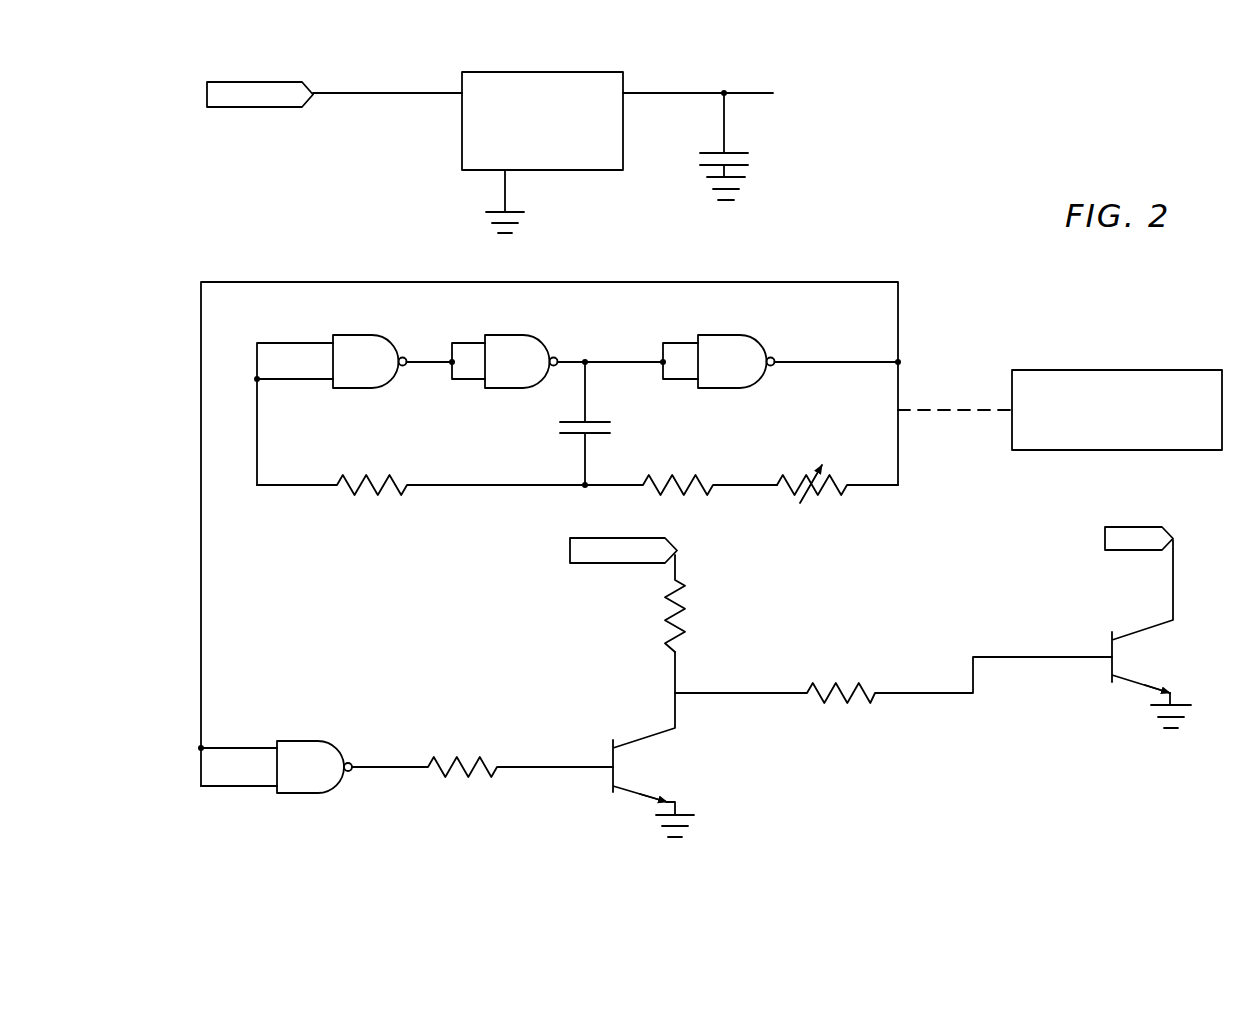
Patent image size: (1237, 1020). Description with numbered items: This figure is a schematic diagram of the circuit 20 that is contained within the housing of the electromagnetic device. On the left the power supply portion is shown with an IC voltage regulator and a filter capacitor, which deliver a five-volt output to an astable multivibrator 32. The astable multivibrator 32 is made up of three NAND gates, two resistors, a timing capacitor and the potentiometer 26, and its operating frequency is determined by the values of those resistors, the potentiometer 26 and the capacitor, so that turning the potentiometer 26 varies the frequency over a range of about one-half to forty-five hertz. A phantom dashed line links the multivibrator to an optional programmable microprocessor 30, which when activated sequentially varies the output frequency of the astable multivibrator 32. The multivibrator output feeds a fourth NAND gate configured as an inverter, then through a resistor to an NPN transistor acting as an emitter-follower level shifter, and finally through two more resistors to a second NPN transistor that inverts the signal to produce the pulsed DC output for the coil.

The circuit 20 is at (928, 217).
The potentiometer 26 is at (822, 490).
The programmable microprocessor 30 is at (1108, 370).
The astable multivibrator 32 is at (603, 313).